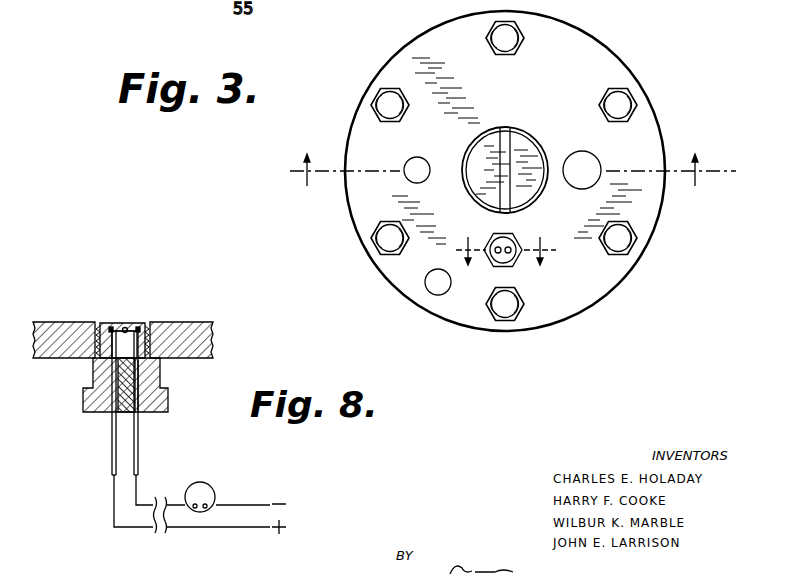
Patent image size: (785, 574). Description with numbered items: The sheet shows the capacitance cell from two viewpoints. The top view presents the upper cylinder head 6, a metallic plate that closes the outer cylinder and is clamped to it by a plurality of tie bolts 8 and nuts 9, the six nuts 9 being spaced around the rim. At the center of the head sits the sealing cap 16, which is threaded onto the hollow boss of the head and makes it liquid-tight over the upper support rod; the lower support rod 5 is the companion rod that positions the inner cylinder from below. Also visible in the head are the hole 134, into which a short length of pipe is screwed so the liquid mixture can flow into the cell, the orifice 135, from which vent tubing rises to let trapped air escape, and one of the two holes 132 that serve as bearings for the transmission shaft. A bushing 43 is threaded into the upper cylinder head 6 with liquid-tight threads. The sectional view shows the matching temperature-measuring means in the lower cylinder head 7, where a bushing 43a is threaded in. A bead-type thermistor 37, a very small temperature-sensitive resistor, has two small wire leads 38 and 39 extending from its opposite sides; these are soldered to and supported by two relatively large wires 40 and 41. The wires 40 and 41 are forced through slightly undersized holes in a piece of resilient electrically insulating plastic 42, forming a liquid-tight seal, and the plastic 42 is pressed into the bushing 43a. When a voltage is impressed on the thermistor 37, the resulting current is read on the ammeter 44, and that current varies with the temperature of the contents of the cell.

In FIG. 3, the upper cylinder head 6 is at (583, 34).
In FIG. 3, the nuts 9 is at (514, 24).
In FIG. 3, the sealing cap 16 is at (527, 130).
In FIG. 3, the orifice 135 is at (421, 158).
In FIG. 3, the hole 134 is at (599, 158).
In FIG. 3, the holes 132 is at (428, 294).
In FIG. 3, the bushing 43 is at (510, 252).
In FIG. 8, the bushing 43a is at (168, 398).
In FIG. 3, the wire 40 is at (497, 254).
In FIG. 8, the wire 40 is at (110, 457).
In FIG. 3, the wire 41 is at (509, 254).
In FIG. 8, the wire 41 is at (138, 452).
In FIG. 8, the resilient electrically insulating plastic 42 is at (139, 400).
In FIG. 3, the tie bolts 8 is at (505, 251).
In FIG. 3, the lower support rod 5 is at (504, 170).
In FIG. 8, the lower cylinder head 7 is at (212, 329).
In FIG. 8, the bead-type thermistor 37 is at (125, 327).
In FIG. 8, the wire lead 38 is at (112, 327).
In FIG. 8, the wire lead 39 is at (139, 327).
In FIG. 8, the ammeter 44 is at (213, 488).